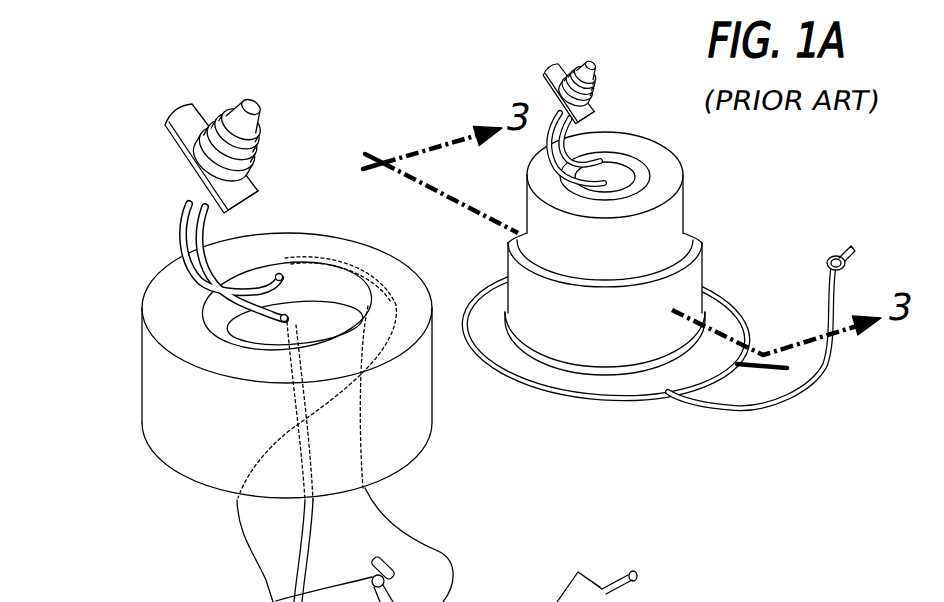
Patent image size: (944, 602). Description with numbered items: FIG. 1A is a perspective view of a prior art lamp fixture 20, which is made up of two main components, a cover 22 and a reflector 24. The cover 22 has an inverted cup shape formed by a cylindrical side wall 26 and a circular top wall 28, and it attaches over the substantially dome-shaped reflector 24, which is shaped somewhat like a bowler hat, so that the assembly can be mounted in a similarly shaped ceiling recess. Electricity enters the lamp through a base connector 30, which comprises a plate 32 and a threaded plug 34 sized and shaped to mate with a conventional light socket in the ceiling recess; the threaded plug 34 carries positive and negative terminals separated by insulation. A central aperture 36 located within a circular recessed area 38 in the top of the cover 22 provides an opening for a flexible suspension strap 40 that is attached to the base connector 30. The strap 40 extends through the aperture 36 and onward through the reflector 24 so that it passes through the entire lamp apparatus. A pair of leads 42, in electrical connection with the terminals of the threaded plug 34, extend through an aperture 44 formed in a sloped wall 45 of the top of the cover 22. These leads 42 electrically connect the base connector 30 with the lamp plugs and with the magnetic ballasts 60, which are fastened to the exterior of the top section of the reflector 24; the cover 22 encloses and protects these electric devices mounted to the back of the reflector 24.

The lamp fixture 20 is at (668, 415).
The cover 22 is at (668, 175).
The reflector 24 is at (698, 252).
The cylindrical side wall 26 is at (160, 440).
The circular top wall 28 is at (172, 293).
The base connector 30 is at (340, 111).
The plate 32 is at (211, 158).
The threaded plug 34 is at (233, 138).
The central aperture 36 is at (345, 331).
The circular recessed area 38 is at (370, 322).
The flexible suspension strap 40 is at (180, 217).
The leads 42 is at (207, 230).
The aperture 44 is at (280, 274).
The sloped wall 45 is at (358, 318).
The magnetic ballasts 60 is at (437, 454).